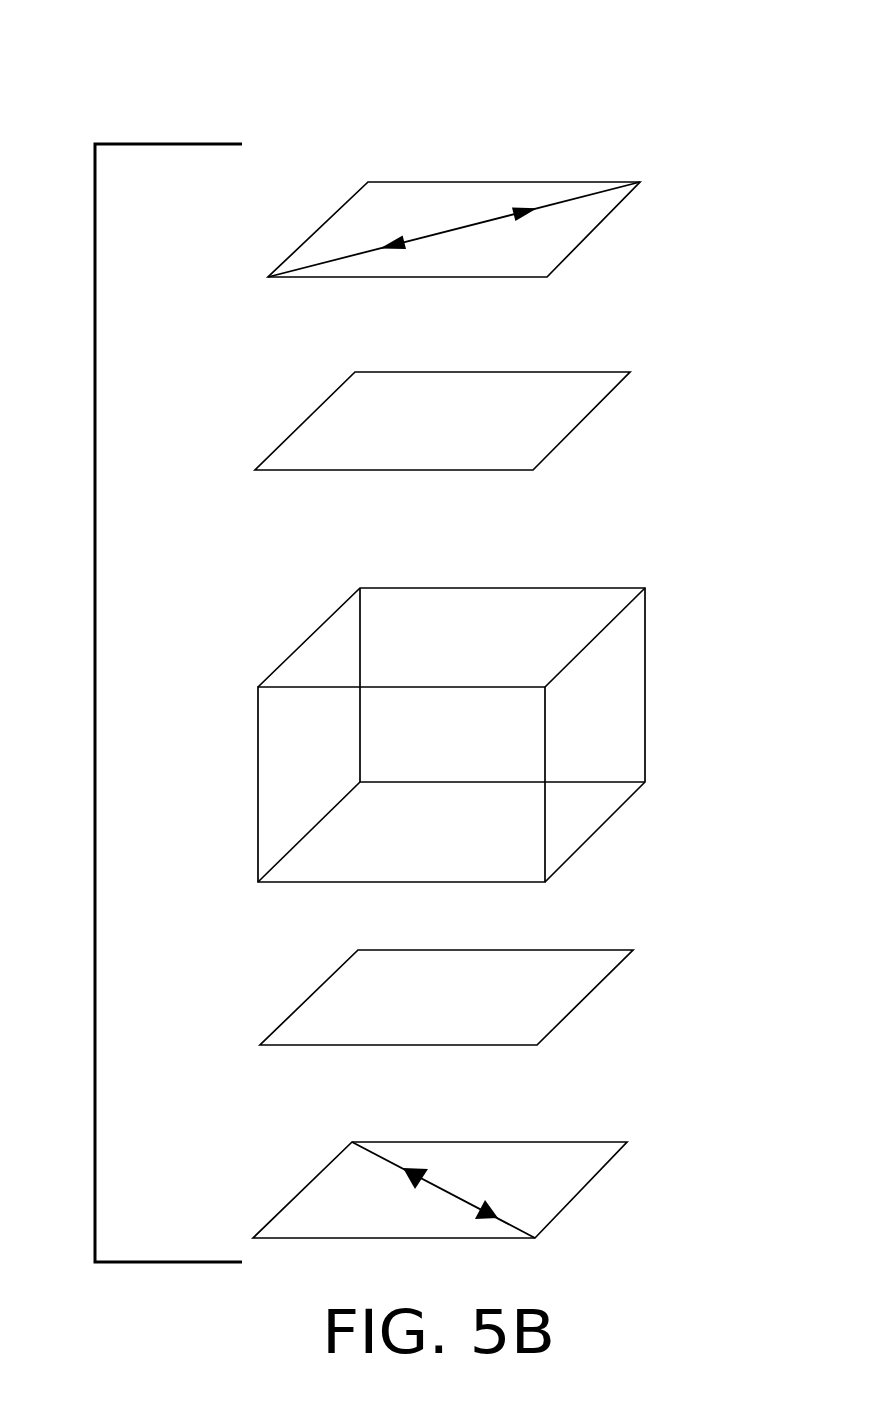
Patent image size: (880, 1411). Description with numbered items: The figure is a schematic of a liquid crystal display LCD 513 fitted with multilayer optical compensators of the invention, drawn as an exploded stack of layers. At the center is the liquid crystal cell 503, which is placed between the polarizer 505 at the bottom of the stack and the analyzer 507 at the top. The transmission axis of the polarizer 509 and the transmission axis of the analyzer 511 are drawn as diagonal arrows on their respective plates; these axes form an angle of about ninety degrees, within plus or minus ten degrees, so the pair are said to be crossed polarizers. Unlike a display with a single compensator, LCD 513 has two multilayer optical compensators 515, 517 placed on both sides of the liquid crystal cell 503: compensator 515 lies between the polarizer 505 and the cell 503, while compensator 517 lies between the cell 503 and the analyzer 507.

The LCD 513 is at (492, 112).
The analyzer 507 is at (583, 182).
The transmission axis of the analyzer 511 is at (438, 233).
The multilayer optical compensator 517 is at (597, 388).
The liquid crystal cell 503 is at (257, 768).
The multilayer optical compensator 515 is at (587, 970).
The polarizer 505 is at (623, 1142).
The transmission axis of the polarizer 509 is at (448, 1195).